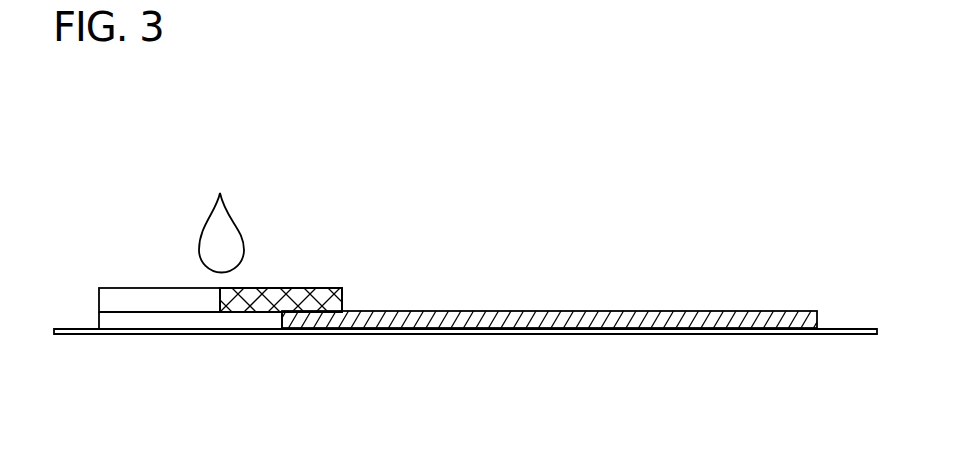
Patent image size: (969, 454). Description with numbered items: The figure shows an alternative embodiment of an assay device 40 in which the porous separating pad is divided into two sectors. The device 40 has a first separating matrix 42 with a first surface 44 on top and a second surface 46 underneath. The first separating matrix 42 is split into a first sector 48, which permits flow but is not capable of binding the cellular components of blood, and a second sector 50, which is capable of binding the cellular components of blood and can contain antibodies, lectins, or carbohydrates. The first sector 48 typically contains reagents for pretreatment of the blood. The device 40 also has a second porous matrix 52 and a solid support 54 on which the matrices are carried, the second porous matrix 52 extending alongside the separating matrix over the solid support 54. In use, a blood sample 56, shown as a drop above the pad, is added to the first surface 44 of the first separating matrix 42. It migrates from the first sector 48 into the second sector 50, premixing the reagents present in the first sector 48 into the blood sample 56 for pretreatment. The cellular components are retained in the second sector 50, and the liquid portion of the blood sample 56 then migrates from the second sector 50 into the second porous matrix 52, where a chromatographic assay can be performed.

The device 40 is at (787, 238).
The first separating matrix 42 is at (302, 288).
The first surface 44 is at (328, 288).
The second surface 46 is at (112, 322).
The first sector 48 is at (132, 295).
The second sector 50 is at (255, 291).
The second porous matrix 52 is at (487, 317).
The solid support 54 is at (250, 335).
The blood sample 56 is at (222, 240).